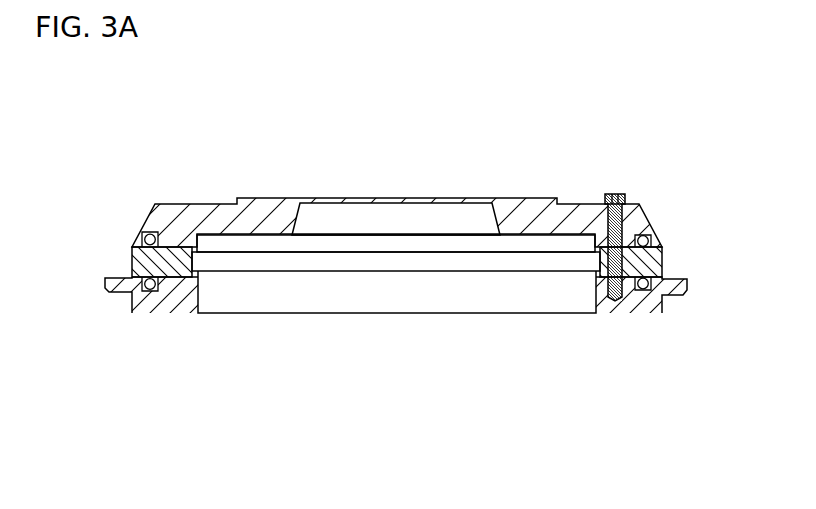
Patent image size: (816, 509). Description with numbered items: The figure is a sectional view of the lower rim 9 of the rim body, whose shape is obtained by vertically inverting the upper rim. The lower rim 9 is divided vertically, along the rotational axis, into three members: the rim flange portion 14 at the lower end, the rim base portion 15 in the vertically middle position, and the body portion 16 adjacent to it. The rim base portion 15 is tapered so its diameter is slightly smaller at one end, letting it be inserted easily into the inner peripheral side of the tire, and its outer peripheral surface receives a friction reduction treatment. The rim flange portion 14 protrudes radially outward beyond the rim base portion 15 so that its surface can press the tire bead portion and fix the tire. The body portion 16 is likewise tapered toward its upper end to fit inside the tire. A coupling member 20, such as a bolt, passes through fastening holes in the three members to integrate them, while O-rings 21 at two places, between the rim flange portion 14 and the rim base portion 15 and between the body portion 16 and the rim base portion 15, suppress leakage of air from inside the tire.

The lower rim 9 is at (394, 204).
The rim flange portion 14 is at (645, 303).
The rim base portion 15 is at (650, 260).
The body portion 16 is at (636, 229).
The coupling member 20 is at (618, 193).
The O-ring 21 is at (143, 233).